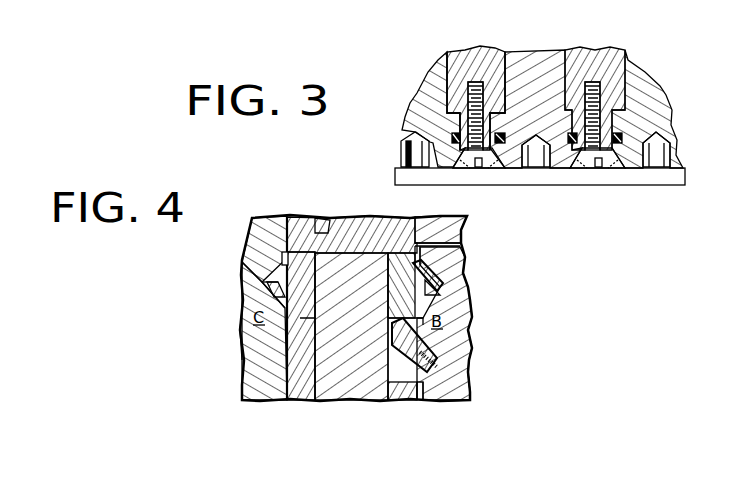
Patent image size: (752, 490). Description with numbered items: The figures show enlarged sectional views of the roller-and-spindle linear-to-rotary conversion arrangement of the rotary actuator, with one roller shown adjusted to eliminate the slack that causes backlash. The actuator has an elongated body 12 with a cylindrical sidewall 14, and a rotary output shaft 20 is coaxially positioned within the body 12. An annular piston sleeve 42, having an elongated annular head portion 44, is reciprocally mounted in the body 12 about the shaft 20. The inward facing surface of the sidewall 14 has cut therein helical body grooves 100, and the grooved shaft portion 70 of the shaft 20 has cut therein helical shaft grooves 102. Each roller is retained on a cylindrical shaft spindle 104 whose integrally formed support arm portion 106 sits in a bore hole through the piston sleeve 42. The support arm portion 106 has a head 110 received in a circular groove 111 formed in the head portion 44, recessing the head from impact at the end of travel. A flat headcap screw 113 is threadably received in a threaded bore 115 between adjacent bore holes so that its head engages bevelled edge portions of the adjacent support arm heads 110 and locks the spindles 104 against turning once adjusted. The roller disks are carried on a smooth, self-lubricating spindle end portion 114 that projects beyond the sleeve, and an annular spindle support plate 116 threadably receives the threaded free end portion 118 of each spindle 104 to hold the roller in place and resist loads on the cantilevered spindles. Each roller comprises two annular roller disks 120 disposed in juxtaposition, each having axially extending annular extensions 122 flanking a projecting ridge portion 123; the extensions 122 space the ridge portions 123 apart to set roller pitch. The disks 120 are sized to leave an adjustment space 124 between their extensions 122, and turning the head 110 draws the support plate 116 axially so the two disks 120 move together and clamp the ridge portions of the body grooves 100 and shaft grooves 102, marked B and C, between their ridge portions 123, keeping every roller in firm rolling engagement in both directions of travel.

In FIG. 4, the body 12 is at (450, 400).
In FIG. 4, the cylindrical sidewall 14 is at (466, 398).
In FIG. 4, the rotary output shaft 20 is at (268, 226).
In FIG. 3, the piston sleeve 42 is at (503, 53).
In FIG. 4, the piston sleeve 42 is at (415, 400).
In FIG. 3, the head portion 44 is at (460, 47).
In FIG. 4, the grooved shaft portion 70 is at (275, 332).
In FIG. 4, the helical body grooves 100 is at (460, 343).
In FIG. 4, the helical shaft grooves 102 is at (242, 392).
In FIG. 3, the shaft spindle 104 is at (432, 107).
In FIG. 4, the shaft spindle 104 is at (368, 398).
In FIG. 3, the support arm portion 106 is at (437, 77).
In FIG. 3, the support arm head 110 is at (412, 127).
In FIG. 3, the circular groove 111 is at (405, 177).
In FIG. 3, the flat headcap screw 113 is at (488, 172).
In FIG. 3, the spindle end portion 114 is at (408, 142).
In FIG. 4, the spindle end portion 114 is at (342, 352).
In FIG. 3, the threaded bore 115 is at (483, 83).
In FIG. 4, the spindle support plate 116 is at (287, 216).
In FIG. 4, the threaded free end portion 118 is at (322, 228).
In FIG. 4, the roller disk 120 is at (252, 240).
In FIG. 4, the annular extension 122 is at (462, 258).
In FIG. 4, the ridge portion 123 is at (462, 273).
In FIG. 4, the adjustment space 124 is at (303, 400).